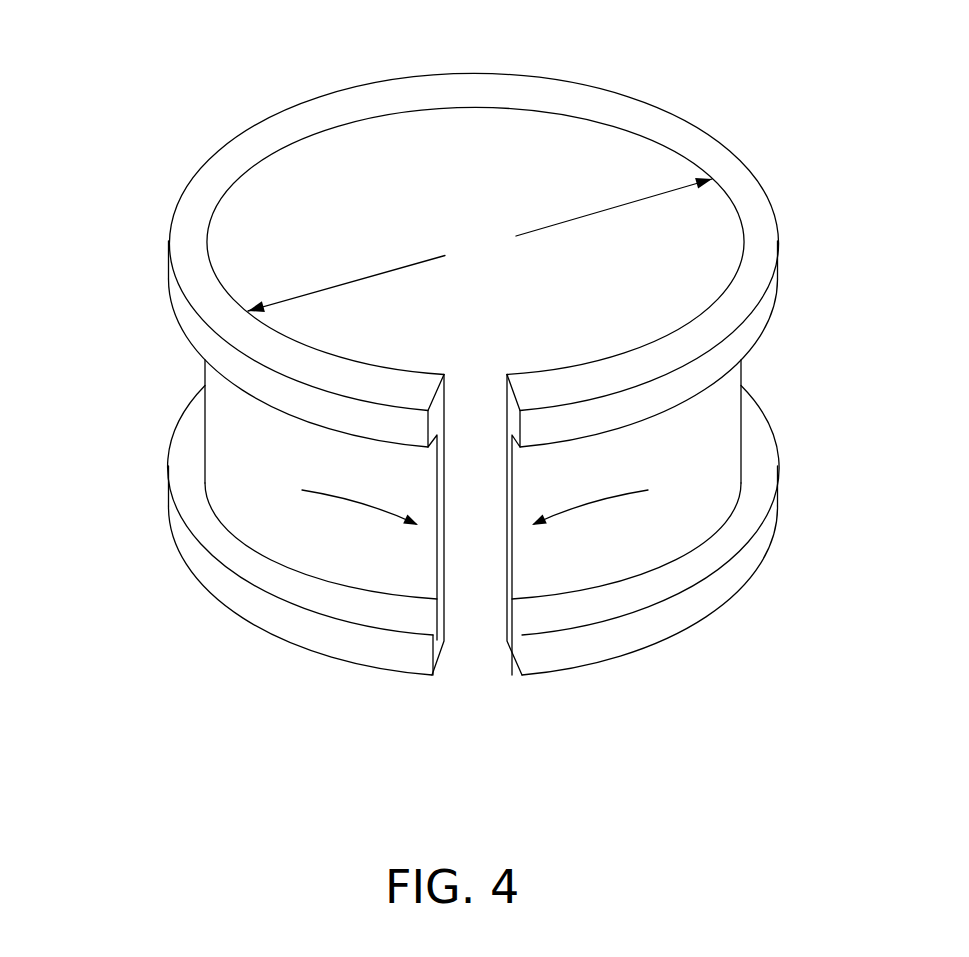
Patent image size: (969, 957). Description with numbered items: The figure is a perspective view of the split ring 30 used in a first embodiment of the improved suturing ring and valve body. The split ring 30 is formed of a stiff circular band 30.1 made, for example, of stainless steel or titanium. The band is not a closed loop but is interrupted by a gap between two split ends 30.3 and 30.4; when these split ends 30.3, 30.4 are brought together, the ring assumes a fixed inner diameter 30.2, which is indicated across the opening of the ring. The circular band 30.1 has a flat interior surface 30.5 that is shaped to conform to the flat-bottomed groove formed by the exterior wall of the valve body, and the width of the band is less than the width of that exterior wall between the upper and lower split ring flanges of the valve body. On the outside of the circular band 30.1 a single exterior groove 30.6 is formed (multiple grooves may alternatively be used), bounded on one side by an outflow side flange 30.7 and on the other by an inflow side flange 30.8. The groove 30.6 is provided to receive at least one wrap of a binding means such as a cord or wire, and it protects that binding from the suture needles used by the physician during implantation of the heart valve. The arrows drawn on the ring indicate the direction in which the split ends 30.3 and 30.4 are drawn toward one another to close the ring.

The split ring 30 is at (259, 52).
The circular band 30.1 is at (632, 118).
The inner diameter 30.2 is at (480, 245).
The split end 30.3 is at (438, 680).
The split end 30.4 is at (518, 640).
The flat interior surface 30.5 is at (513, 148).
The exterior groove 30.6 is at (234, 433).
The outflow side flange 30.7 is at (190, 316).
The inflow side flange 30.8 is at (208, 568).